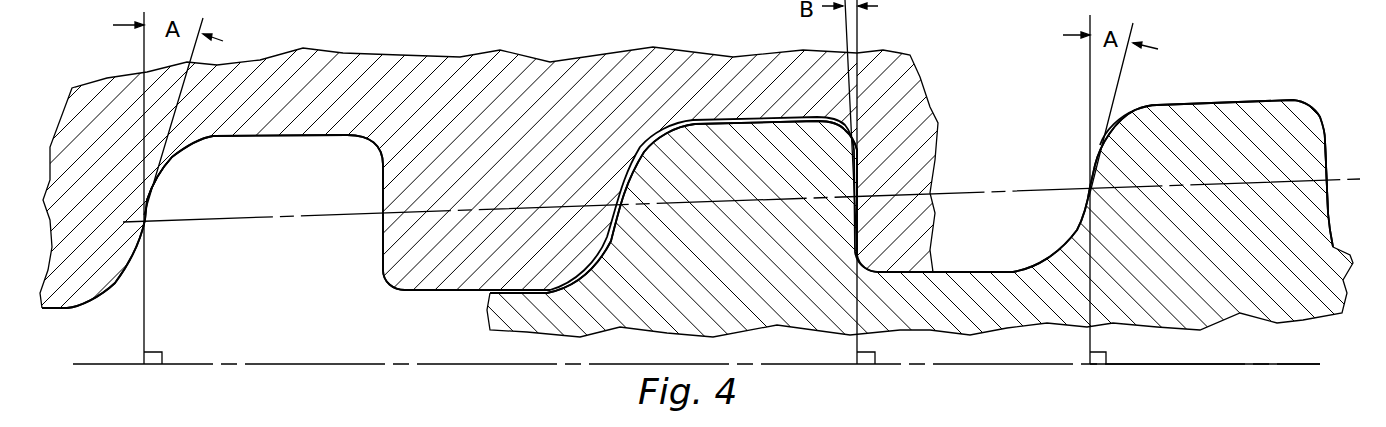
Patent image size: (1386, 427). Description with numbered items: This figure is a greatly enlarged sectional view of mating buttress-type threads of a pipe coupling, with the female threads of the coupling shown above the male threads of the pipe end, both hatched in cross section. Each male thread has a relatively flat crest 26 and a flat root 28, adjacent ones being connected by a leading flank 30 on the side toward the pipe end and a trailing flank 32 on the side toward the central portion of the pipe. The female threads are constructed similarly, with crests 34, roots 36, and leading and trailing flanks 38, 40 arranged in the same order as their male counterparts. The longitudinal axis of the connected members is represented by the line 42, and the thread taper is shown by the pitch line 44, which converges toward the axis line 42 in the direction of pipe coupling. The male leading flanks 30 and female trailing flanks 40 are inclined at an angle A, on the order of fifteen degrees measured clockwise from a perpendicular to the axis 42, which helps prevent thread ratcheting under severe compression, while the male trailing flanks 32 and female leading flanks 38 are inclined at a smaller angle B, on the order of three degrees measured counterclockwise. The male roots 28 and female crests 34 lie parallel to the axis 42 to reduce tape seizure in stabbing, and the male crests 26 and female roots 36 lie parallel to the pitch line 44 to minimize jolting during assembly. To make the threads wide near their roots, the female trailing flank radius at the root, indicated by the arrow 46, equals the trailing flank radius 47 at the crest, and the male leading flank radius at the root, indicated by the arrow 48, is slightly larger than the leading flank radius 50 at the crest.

The male thread crest 26 is at (1223, 100).
The male thread root 28 is at (994, 271).
The male leading flank 30 is at (1100, 157).
The male trailing flank 32 is at (1328, 148).
The female thread crest 34 is at (455, 293).
The female thread root 36 is at (273, 140).
The female leading flank 38 is at (383, 184).
The female trailing flank 40 is at (144, 252).
The axis line 42 is at (1086, 364).
The pitch line 44 is at (478, 210).
The female trailing flank radius at the root 46 is at (182, 155).
The female trailing flank radius at the crest 47 is at (113, 288).
The male leading flank radius at the root 48 is at (1062, 248).
The male leading flank radius at the crest 50 is at (1122, 127).